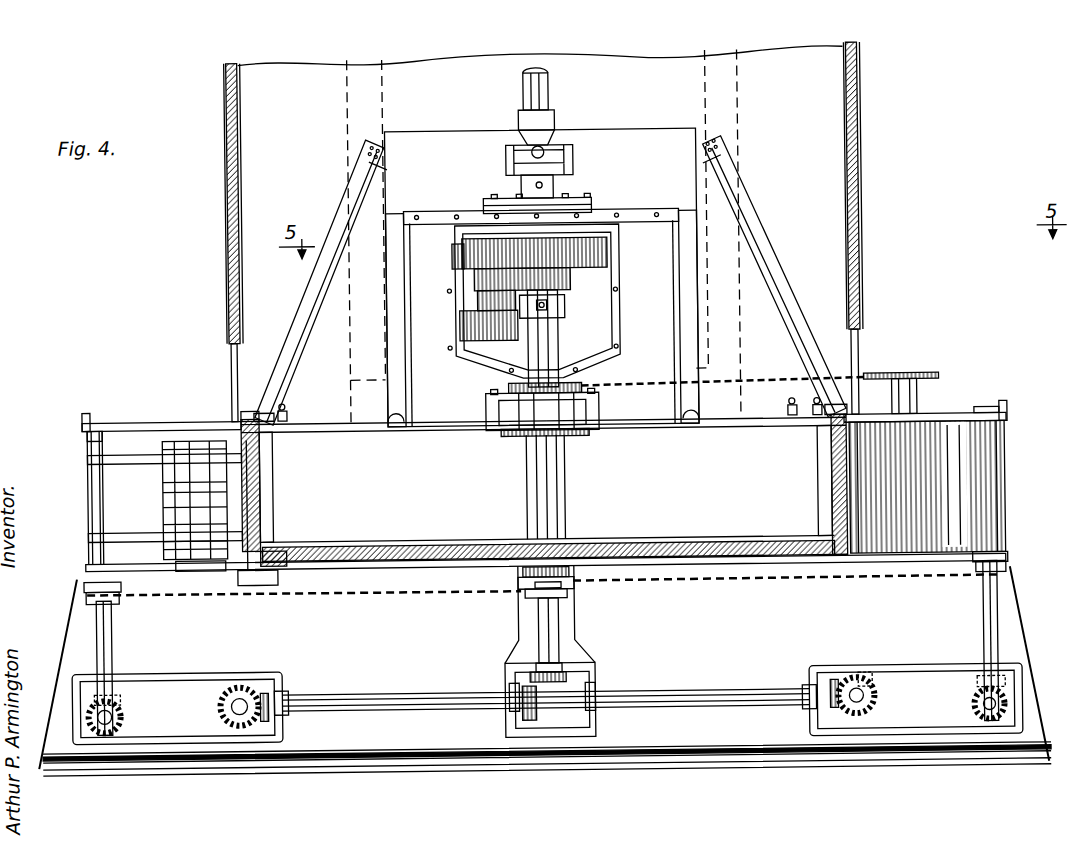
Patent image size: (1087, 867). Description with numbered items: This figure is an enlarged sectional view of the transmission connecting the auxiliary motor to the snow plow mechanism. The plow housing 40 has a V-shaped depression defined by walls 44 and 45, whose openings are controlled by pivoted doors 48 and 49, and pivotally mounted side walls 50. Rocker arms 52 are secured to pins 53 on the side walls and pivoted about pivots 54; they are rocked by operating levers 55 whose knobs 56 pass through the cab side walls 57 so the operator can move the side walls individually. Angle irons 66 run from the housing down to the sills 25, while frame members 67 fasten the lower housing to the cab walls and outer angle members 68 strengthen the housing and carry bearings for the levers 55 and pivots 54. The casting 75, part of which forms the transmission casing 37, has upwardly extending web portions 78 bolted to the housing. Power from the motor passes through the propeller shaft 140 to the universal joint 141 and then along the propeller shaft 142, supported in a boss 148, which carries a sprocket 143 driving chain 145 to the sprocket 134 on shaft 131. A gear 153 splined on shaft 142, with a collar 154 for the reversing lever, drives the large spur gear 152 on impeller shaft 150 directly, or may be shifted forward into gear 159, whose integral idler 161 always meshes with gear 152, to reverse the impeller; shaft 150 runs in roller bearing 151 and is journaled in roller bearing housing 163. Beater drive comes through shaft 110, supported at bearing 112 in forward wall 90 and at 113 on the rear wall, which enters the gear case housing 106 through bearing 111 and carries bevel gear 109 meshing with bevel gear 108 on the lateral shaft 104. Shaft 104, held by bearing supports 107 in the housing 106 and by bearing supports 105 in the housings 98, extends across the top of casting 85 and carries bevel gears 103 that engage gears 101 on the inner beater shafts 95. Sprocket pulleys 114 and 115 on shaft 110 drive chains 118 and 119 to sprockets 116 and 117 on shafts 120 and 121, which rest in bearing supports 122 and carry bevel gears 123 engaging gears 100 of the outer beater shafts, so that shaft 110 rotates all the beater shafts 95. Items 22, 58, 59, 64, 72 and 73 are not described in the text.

The upright post 22 is at (229, 264).
The sills 25 is at (352, 92).
The transmission casing 37 is at (556, 332).
The housing 40 is at (320, 451).
The wall 44 is at (482, 490).
The wall 45 is at (720, 489).
The door 48 is at (262, 491).
The door 49 is at (920, 498).
The side walls 50 is at (1000, 492).
The rocker arms 52 is at (95, 458).
The pins 53 is at (256, 457).
The pivots 54 is at (90, 483).
The operating levers 55 is at (143, 418).
The operating knobs 56 is at (288, 411).
The side walls 57 is at (234, 366).
The frame side bar 58 is at (820, 441).
The brace foot 59 is at (262, 404).
The bottom frame beam 64 is at (708, 545).
The supporting angle irons 66 is at (302, 310).
The frame members 67 is at (244, 410).
The outer angle members 68 is at (88, 408).
The hub 72 is at (165, 492).
The lower bearing 73 is at (192, 569).
The casting 75 is at (638, 128).
The web portions 78 is at (392, 345).
The casting 85 is at (406, 668).
The forward wall 90 is at (105, 562).
The shafts 95 is at (125, 700).
The housings 98 is at (175, 740).
The bevel gears 100 is at (120, 718).
The bevel gears 101 is at (240, 724).
The bevel gears 103 is at (258, 722).
The shaft 104 is at (640, 700).
The bearing supports 105 is at (290, 694).
The gear case housing 106 is at (560, 736).
The bearing supports 107 is at (510, 686).
The bevel gear 108 is at (535, 736).
The bevel gear 109 is at (590, 668).
The shaft 110 is at (557, 612).
The bearing support 111 is at (532, 666).
The bearing support 112 is at (566, 556).
The bearing support 113 is at (566, 433).
The sprocket pulley 114 is at (532, 591).
The sprocket pulley 115 is at (516, 584).
The sprocket 116 is at (86, 592).
The sprocket 117 is at (1005, 575).
The sprocket chain 118 is at (360, 594).
The sprocket chain 119 is at (766, 586).
The shaft 120 is at (96, 636).
The shaft 121 is at (996, 626).
The bearing supports 122 is at (86, 581).
The bevel gears 123 is at (105, 750).
The shaft 131 is at (905, 380).
The sprocket 134 is at (922, 376).
The propeller shaft 140 is at (540, 92).
The universal joint connection 141 is at (552, 150).
The propeller shaft 142 is at (526, 191).
The sprocket 143 is at (600, 381).
The sprocket chain 145 is at (769, 382).
The boss 148 is at (556, 350).
The shaft 150 is at (560, 314).
The roller bearing support 151 is at (505, 396).
The spur gear 152 is at (604, 262).
The gear 153 is at (572, 285).
The collar portion 154 is at (568, 300).
The gear 159 is at (475, 323).
The idler gear 161 is at (470, 258).
The roller bearing housing 163 is at (588, 216).